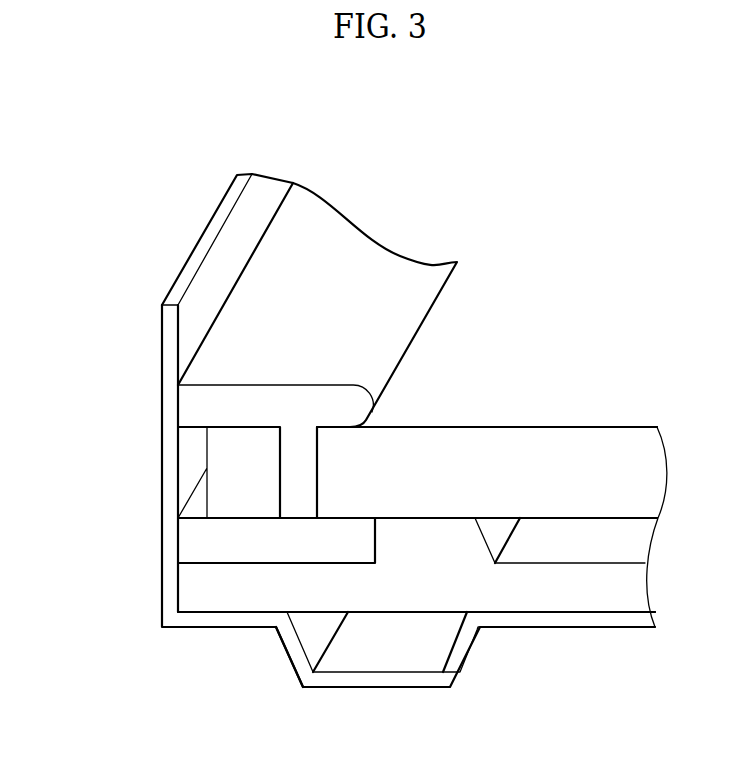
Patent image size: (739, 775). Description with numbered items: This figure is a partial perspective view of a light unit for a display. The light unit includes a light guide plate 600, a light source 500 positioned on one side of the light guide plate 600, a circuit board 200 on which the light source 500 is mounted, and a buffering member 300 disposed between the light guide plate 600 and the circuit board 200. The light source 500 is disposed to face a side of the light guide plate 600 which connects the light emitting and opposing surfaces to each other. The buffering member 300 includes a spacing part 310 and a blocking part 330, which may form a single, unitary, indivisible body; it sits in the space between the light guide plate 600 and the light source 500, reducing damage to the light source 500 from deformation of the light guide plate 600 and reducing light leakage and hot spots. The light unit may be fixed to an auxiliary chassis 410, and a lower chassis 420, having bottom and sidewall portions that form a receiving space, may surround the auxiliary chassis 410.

The circuit board 200 is at (215, 537).
The buffering member 300 is at (80, 395).
The spacing part 310 is at (298, 450).
The blocking part 330 is at (248, 407).
The auxiliary chassis 410 is at (566, 586).
The lower chassis 420 is at (390, 680).
The light source 500 is at (246, 498).
The light guide plate 600 is at (566, 460).